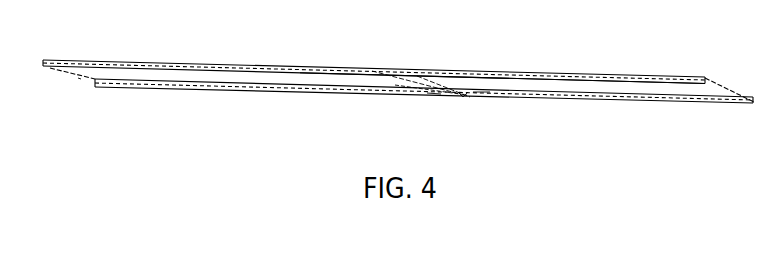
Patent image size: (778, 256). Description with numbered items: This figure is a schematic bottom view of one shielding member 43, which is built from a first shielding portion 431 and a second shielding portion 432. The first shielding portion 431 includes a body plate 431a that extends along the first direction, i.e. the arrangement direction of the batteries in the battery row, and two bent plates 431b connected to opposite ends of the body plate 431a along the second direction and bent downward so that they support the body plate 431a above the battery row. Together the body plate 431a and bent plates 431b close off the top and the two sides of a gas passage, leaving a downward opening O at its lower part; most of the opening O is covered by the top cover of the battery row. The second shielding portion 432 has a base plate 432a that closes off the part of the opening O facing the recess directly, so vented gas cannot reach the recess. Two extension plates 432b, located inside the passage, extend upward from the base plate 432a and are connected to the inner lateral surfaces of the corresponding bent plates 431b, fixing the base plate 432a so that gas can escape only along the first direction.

The shielding member 43 is at (343, 48).
The first shielding portion 431 is at (255, 64).
The body plate 431a is at (592, 82).
The bent plates 431b is at (214, 89).
The second shielding portion 432 is at (410, 85).
The base plate 432a is at (435, 92).
The extension plates 432b is at (463, 95).
The opening O is at (80, 80).